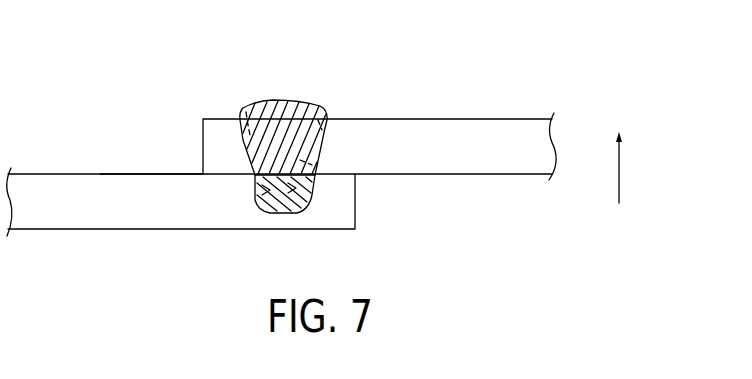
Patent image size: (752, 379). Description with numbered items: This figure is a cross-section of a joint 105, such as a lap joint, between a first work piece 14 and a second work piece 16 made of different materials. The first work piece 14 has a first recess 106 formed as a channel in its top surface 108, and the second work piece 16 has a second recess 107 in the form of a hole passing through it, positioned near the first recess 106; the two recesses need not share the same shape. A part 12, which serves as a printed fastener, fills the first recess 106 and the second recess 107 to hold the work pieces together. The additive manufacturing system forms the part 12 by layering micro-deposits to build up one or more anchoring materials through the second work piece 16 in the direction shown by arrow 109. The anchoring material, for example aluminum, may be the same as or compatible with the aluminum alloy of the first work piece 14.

The part 12 is at (296, 163).
The first work piece 14 is at (53, 214).
The second work piece 16 is at (529, 156).
The joint 105 is at (132, 82).
The first recess 106 is at (252, 211).
The second recess 107 is at (335, 133).
The top surface 108 is at (128, 168).
The arrow 109 is at (621, 170).